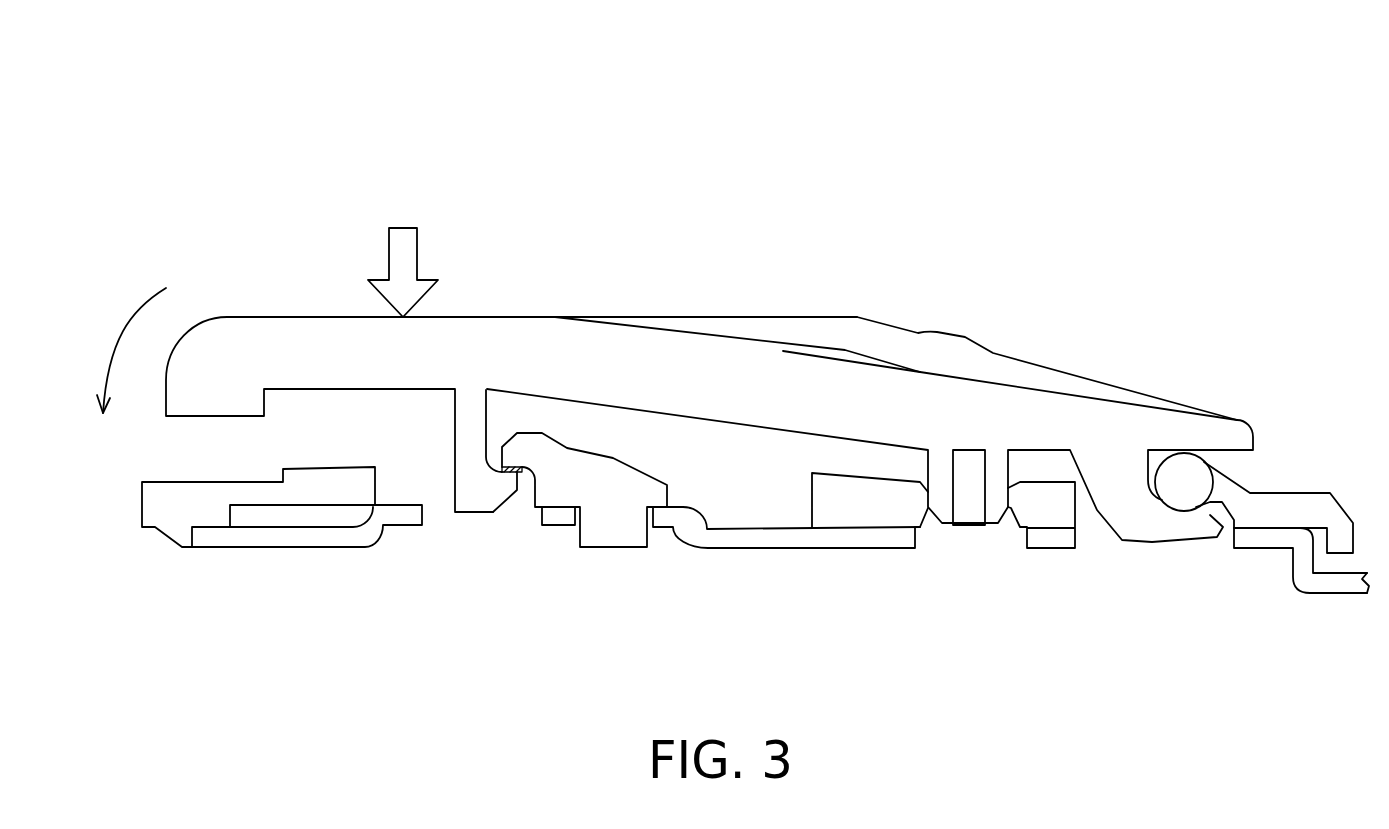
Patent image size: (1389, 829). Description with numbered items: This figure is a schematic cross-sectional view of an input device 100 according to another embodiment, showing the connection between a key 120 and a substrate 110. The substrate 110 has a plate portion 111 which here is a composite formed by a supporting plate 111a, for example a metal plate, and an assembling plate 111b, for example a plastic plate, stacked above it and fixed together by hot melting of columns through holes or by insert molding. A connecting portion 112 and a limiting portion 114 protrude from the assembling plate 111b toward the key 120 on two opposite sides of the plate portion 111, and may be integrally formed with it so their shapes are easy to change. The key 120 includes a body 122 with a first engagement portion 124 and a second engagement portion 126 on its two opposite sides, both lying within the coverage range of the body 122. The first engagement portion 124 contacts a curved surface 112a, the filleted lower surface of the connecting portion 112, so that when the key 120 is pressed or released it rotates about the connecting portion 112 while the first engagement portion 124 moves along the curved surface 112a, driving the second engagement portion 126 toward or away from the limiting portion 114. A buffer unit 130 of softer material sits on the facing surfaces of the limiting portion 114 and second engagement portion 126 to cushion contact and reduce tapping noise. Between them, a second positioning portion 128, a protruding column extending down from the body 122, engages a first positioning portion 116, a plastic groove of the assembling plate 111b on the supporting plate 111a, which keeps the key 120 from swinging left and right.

The input device 100 is at (93, 17).
The substrate 110 is at (1047, 208).
The connecting portion 112 is at (1180, 477).
The curved surface 112a is at (1162, 498).
The limiting portion 114 is at (620, 487).
The first positioning portion 116 is at (868, 513).
The key 120 is at (261, 17).
The body 122 is at (490, 340).
The first engagement portion 124 is at (1100, 590).
The second engagement portion 126 is at (492, 492).
The second positioning portion 128 is at (973, 500).
The buffer unit 130 is at (512, 443).
The plate portion 111 is at (265, 621).
The supporting plate 111a is at (258, 538).
The assembling plate 111b is at (172, 515).